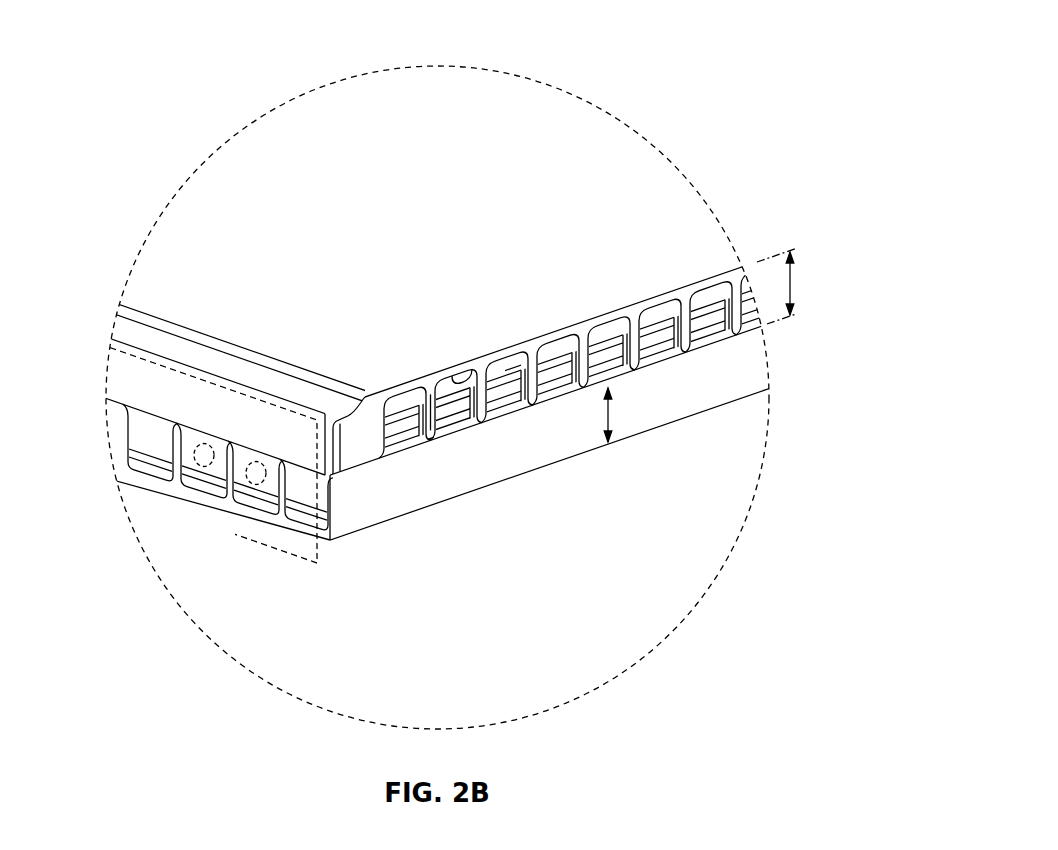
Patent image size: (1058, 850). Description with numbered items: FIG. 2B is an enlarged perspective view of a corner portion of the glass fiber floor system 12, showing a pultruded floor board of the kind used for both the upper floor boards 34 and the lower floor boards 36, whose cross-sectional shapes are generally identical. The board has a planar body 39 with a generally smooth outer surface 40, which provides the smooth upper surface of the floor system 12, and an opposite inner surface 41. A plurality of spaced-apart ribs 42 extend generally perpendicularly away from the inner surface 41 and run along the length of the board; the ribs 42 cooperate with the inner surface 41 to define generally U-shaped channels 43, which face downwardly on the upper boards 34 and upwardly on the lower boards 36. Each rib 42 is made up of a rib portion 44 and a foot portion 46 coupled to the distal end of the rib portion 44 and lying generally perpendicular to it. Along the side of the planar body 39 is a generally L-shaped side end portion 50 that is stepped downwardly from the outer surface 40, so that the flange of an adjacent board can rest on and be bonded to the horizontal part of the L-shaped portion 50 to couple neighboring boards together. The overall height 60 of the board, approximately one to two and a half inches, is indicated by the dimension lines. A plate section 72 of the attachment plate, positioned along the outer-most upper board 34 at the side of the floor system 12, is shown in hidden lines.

The floor system 12 is at (641, 100).
The upper floor board 34 is at (583, 128).
The lower floor board 36 is at (361, 548).
The planar body 39 is at (648, 158).
The outer surface 40 is at (405, 268).
The inner surface 41 is at (458, 381).
The rib 42 is at (597, 342).
The U-shaped channel 43 is at (396, 409).
The rib portion 44 is at (517, 378).
The foot portion 46 is at (437, 438).
The L-shaped side end portion 50 is at (360, 509).
The height 60 is at (797, 285).
The plate section 72 is at (240, 545).